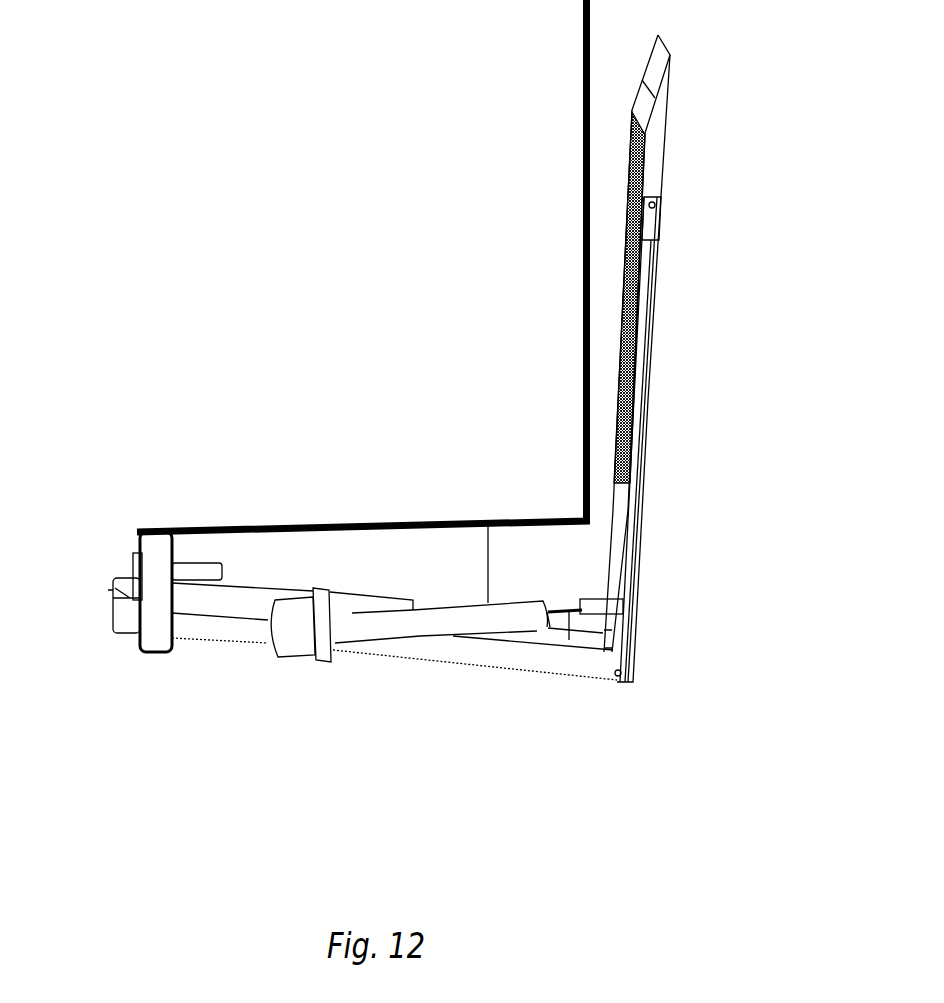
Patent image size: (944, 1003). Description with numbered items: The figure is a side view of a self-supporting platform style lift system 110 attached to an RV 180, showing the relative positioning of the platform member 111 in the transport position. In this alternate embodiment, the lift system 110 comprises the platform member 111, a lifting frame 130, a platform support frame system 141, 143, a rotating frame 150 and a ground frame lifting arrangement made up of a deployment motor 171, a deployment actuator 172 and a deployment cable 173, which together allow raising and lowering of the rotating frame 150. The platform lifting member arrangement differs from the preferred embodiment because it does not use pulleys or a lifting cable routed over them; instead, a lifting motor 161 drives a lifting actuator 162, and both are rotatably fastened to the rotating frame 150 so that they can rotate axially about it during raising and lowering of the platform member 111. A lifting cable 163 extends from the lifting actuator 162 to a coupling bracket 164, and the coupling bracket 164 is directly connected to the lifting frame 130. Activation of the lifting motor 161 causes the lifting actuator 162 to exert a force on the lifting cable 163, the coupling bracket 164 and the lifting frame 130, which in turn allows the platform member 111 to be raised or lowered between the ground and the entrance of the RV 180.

The self-supporting platform style lift system 110 is at (752, 866).
The platform member 111 is at (623, 270).
The lifting frame 130 is at (624, 583).
The platform support frame system 141 is at (630, 440).
The platform support frame system 143 is at (658, 240).
The rotating frame 150 is at (205, 625).
The lifting motor 161 is at (278, 653).
The lifting actuator 162 is at (422, 627).
The lifting cable 163 is at (569, 612).
The coupling bracket 164 is at (607, 610).
The deployment motor 171 is at (203, 572).
The deployment actuator 172 is at (258, 598).
The deployment cable 173 is at (488, 574).
The RV 180 is at (586, 172).